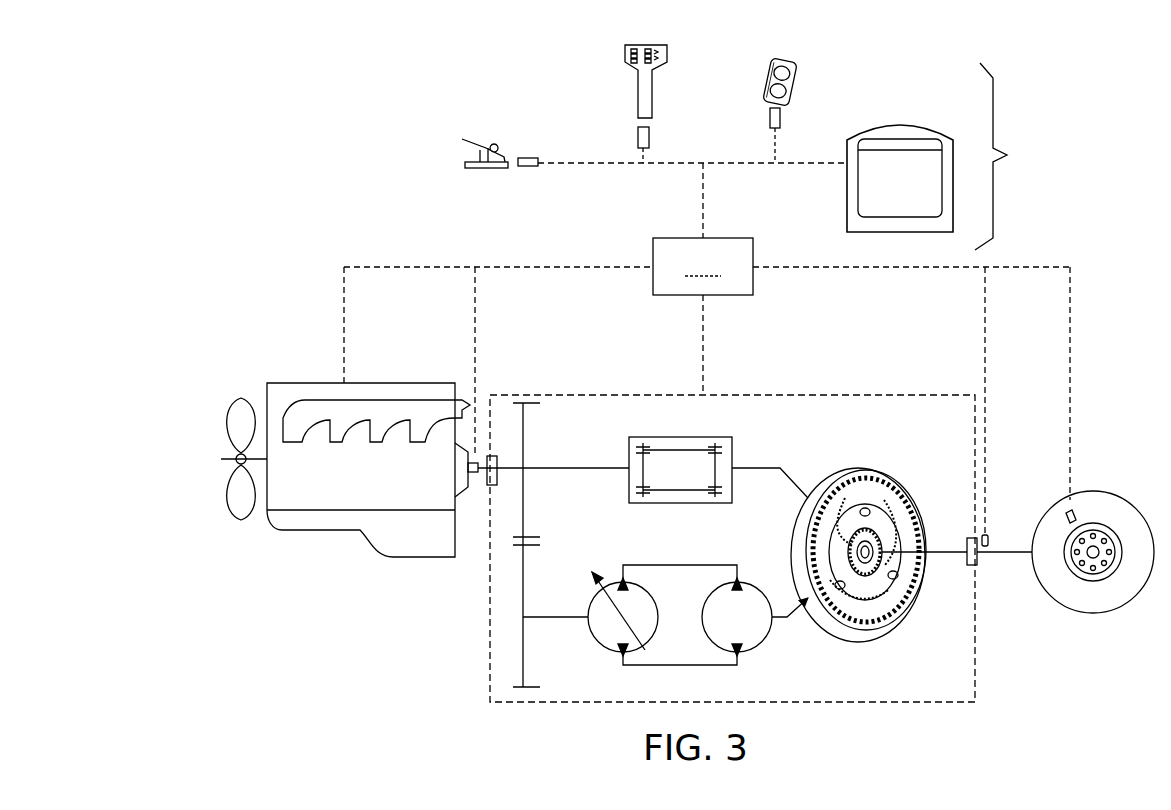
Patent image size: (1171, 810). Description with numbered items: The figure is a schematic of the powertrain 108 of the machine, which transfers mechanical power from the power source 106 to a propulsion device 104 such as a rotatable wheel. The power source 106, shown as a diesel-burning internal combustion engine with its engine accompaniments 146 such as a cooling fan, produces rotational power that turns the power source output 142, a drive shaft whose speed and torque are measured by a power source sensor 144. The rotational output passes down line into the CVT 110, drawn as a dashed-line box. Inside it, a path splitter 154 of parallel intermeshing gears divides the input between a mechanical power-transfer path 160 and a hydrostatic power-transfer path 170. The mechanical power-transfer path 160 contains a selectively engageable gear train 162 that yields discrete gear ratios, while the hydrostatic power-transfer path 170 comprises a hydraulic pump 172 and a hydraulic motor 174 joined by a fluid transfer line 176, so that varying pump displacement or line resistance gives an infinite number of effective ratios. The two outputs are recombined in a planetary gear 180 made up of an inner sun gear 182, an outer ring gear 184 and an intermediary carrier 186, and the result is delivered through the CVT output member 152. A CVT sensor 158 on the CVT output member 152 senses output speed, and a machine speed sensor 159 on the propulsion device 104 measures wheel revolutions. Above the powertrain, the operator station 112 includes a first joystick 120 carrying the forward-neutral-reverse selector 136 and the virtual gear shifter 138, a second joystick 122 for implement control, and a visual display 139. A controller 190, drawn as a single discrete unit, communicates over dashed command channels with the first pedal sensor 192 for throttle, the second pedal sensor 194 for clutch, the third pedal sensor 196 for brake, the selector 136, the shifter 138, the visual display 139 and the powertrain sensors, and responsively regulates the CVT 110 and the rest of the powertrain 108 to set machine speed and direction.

The propulsion device 104 is at (1097, 598).
The power source 106 is at (305, 383).
The powertrain 108 is at (545, 382).
The CVT 110 is at (592, 395).
The operator station 112 is at (1012, 156).
The first joystick 120 is at (468, 156).
The second joystick 122 is at (795, 82).
The F-N-R selector 136 is at (655, 50).
The virtual gear shifter 138 is at (630, 50).
The visual display 139 is at (897, 130).
The power source output 142 is at (473, 473).
The power source sensor 144 is at (475, 450).
The engine accompaniments 146 is at (232, 405).
The CVT output member 152 is at (975, 565).
The path splitter 154 is at (525, 430).
The CVT sensor 158 is at (988, 540).
The machine speed sensor 159 is at (1076, 516).
The mechanical power-transfer path 160 is at (822, 450).
The gear train 162 is at (685, 450).
The hydrostatic power-transfer path 170 is at (685, 633).
The hydraulic pump 172 is at (640, 590).
The hydraulic motor 174 is at (705, 645).
The fluid transfer line 176 is at (685, 565).
The planetary gear 180 is at (878, 545).
The sun gear 182 is at (868, 530).
The ring gear 184 is at (880, 632).
The carrier 186 is at (895, 528).
The controller 190 is at (707, 349).
The first pedal sensor 192 is at (528, 157).
The second pedal sensor 194 is at (782, 118).
The third pedal sensor 196 is at (650, 136).